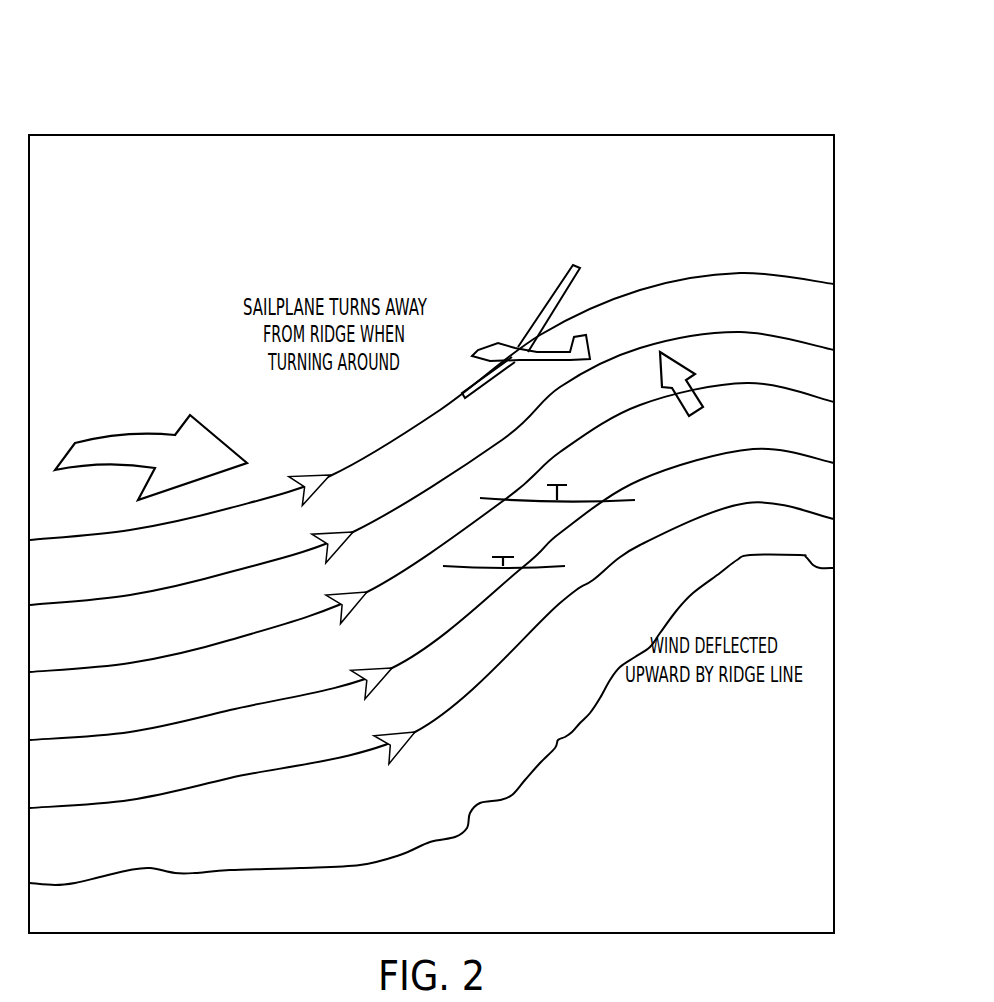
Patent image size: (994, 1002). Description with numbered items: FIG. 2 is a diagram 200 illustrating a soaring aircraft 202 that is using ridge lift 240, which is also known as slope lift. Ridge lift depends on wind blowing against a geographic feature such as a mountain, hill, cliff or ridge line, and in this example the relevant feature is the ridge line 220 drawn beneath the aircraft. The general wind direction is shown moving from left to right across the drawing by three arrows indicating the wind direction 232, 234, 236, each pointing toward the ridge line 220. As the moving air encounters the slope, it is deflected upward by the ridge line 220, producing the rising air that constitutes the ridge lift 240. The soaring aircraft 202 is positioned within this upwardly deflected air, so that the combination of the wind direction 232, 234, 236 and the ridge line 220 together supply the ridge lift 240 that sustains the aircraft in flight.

The diagram 200 is at (643, 101).
The soaring aircraft 202 is at (580, 265).
The ridge line 220 is at (640, 641).
The wind direction 232 is at (157, 435).
The wind direction 234 is at (107, 599).
The wind direction 236 is at (145, 739).
The ridge lift 240 is at (677, 353).